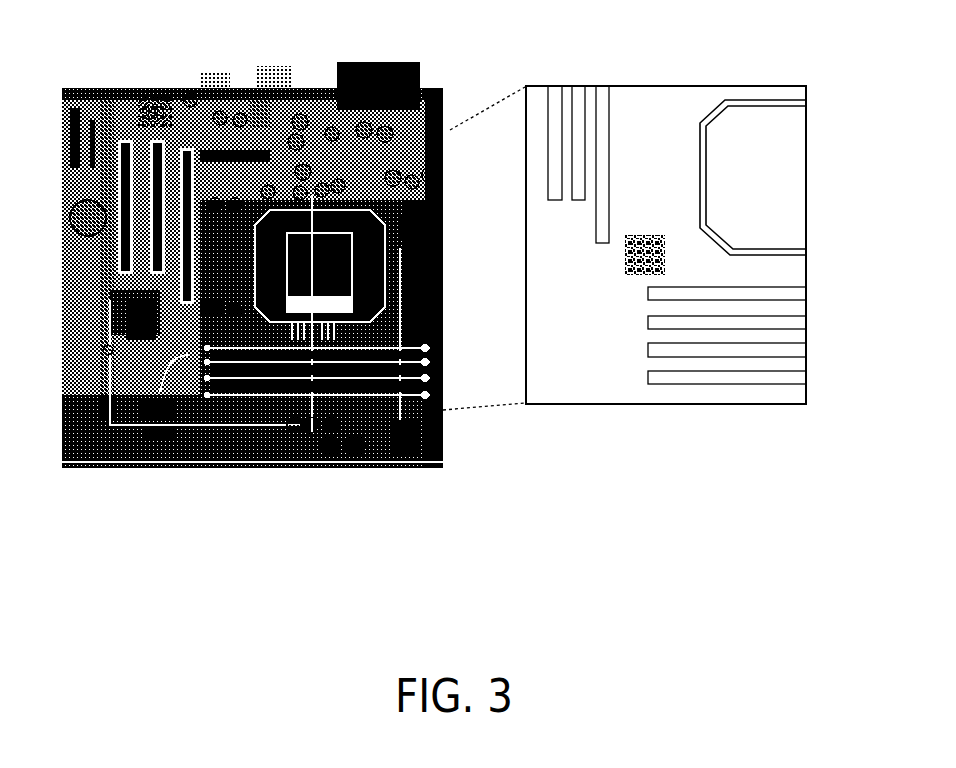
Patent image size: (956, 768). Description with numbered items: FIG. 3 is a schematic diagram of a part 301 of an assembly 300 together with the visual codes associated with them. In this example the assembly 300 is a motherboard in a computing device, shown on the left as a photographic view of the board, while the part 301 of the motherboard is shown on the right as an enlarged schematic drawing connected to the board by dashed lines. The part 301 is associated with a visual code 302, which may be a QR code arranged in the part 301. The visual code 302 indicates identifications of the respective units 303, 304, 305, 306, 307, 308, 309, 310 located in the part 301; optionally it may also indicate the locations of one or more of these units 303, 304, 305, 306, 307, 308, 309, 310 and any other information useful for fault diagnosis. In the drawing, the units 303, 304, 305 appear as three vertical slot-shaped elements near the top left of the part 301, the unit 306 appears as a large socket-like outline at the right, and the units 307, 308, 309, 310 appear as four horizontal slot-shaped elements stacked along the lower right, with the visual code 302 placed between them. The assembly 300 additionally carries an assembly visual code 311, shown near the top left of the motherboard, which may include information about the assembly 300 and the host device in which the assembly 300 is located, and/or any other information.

The assembly 300 is at (236, 246).
The part 301 is at (702, 72).
The visual code 302 is at (624, 262).
The unit 303 is at (553, 200).
The unit 304 is at (578, 86).
The unit 305 is at (609, 152).
The unit 306 is at (806, 158).
The unit 307 is at (806, 296).
The unit 308 is at (806, 326).
The unit 309 is at (806, 352).
The unit 310 is at (806, 381).
The assembly visual code 311 is at (155, 84).